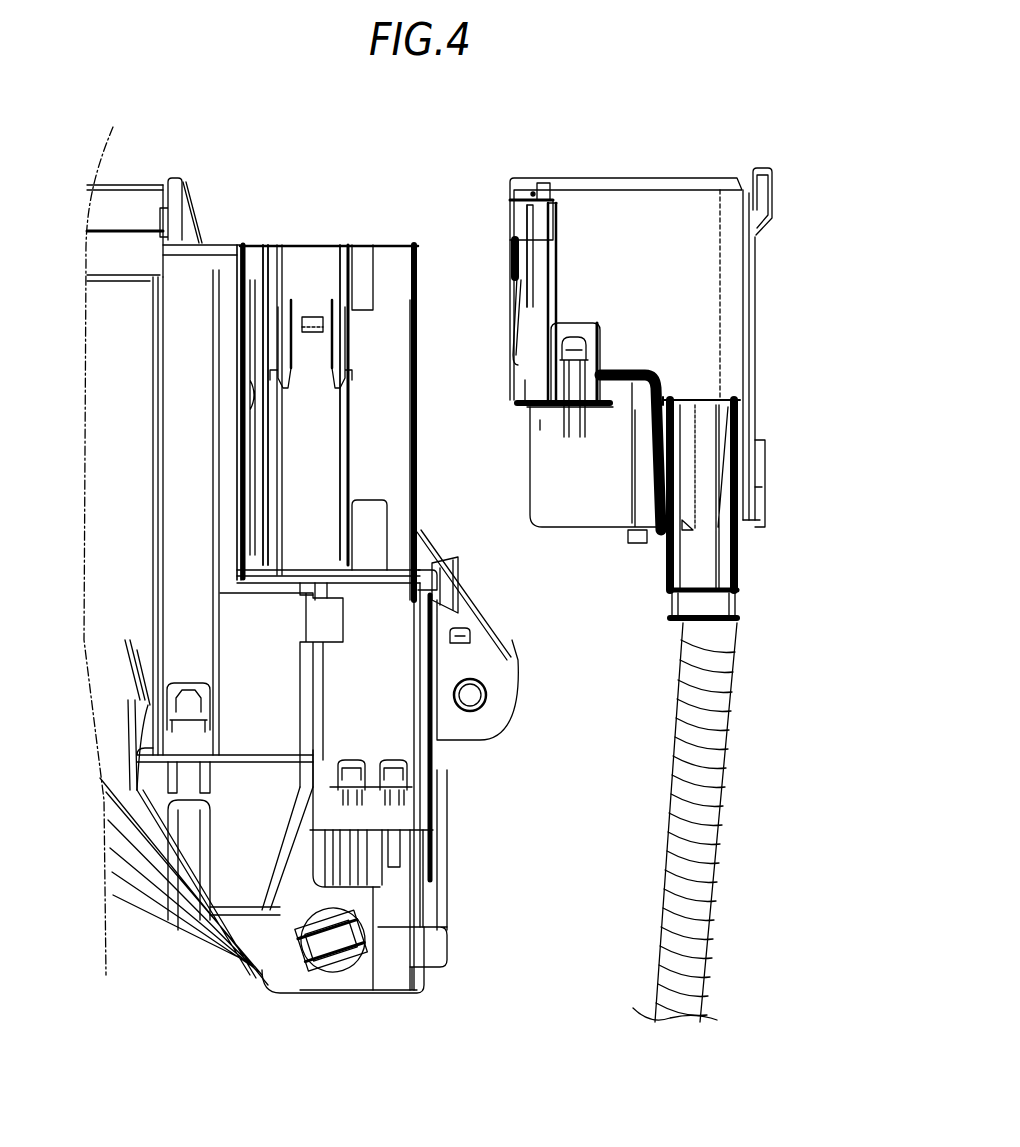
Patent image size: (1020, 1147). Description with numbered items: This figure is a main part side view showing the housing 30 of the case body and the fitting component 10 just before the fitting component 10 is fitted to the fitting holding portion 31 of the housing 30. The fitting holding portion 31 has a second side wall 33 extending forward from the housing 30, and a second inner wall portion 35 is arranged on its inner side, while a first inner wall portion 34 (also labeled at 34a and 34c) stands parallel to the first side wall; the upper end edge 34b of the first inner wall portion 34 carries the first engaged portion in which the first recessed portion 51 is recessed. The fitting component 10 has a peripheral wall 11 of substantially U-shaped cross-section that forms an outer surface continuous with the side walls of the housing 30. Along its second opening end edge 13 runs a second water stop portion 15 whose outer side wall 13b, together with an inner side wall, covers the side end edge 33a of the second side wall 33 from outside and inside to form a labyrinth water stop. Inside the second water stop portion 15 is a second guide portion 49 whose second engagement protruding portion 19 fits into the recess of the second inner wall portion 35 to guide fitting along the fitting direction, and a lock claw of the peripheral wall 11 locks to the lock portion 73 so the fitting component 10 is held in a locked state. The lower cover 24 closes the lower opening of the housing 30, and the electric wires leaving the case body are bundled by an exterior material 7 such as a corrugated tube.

The exterior material 7 is at (693, 803).
The fitting component 10 is at (645, 172).
The peripheral wall 11 is at (693, 297).
The second opening end edge 13 is at (563, 240).
The outer side wall 13b is at (540, 293).
The second water stop portion 15 is at (533, 192).
The second engagement protruding portion 19 is at (510, 225).
The lower cover 24 is at (202, 957).
The housing 30 is at (137, 226).
The fitting holding portion 31 is at (311, 348).
The second side wall 33 is at (229, 273).
The side end edge 33a is at (252, 277).
The first inner wall portion 34 is at (418, 311).
The side wall 34a is at (420, 293).
The upper end edge 34b is at (365, 292).
The side wall 34c is at (387, 396).
The second inner wall portion 35 is at (256, 536).
The second guide portion 49 is at (500, 198).
The first recessed portion 51 is at (378, 257).
The lock portion 73 is at (463, 580).